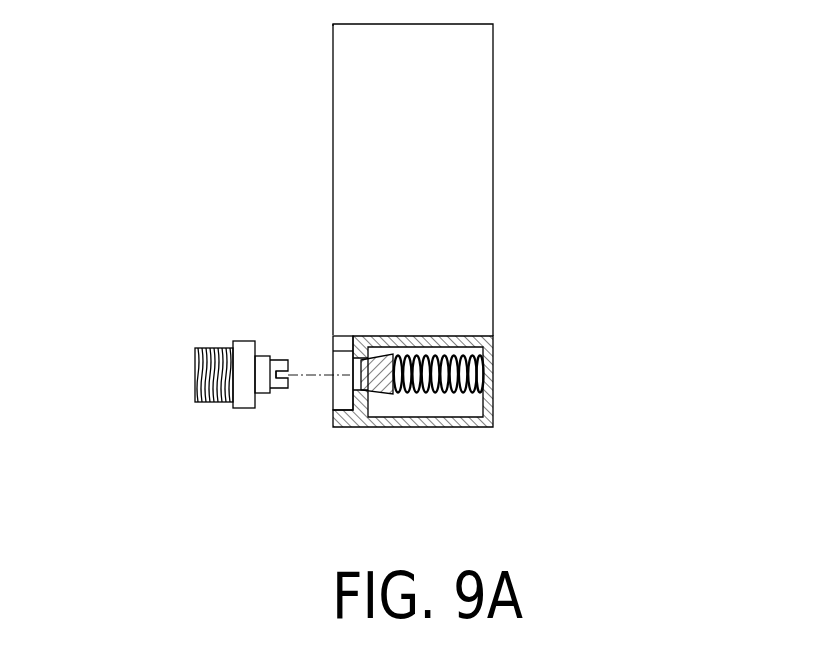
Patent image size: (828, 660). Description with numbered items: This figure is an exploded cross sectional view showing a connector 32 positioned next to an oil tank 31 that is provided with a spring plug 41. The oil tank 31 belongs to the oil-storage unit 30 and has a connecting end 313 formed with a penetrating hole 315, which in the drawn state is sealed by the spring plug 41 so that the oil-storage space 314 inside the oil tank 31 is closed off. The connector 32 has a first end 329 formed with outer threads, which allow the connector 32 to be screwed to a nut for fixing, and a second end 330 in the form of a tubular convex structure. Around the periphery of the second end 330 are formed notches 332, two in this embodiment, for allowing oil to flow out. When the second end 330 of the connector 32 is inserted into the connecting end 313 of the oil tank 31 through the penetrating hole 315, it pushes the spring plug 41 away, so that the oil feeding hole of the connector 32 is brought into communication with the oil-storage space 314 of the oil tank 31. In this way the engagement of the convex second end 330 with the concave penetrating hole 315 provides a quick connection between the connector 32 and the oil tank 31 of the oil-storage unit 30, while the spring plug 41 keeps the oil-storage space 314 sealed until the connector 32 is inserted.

The oil-storage unit 30 is at (238, 153).
The oil tank 31 is at (497, 135).
The connecting end 313 is at (342, 387).
The oil-storage space 314 is at (465, 403).
The penetrating hole 315 is at (355, 368).
The spring plug 41 is at (475, 370).
The connector 32 is at (243, 413).
The first end 329 is at (213, 377).
The second end 330 is at (275, 360).
The notches 332 is at (277, 388).